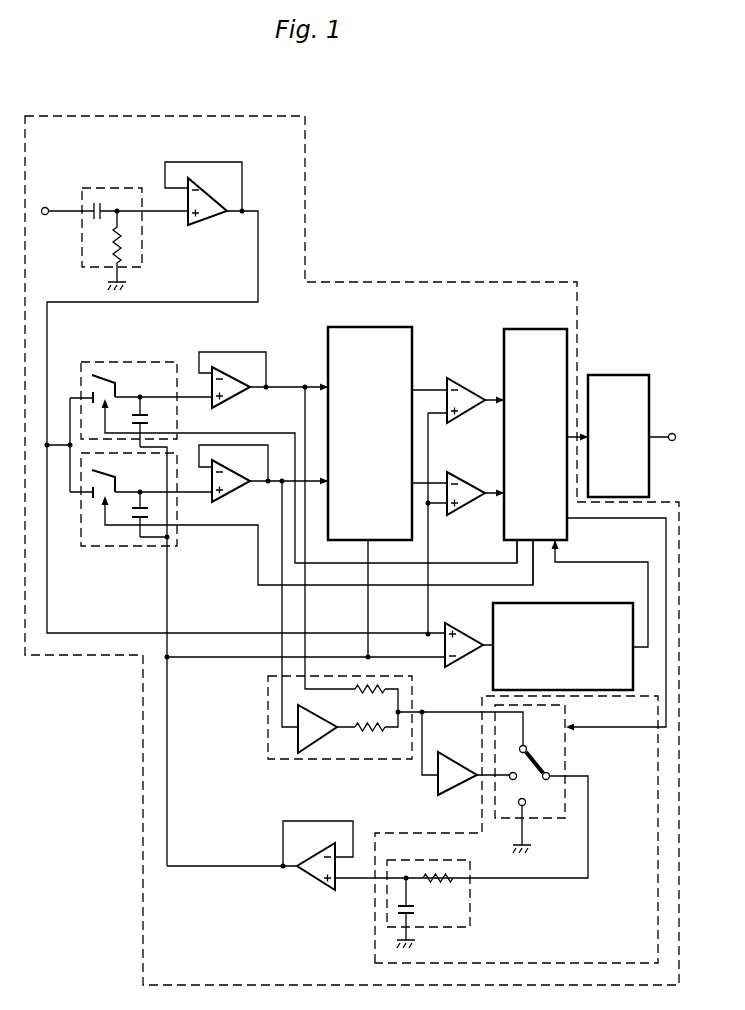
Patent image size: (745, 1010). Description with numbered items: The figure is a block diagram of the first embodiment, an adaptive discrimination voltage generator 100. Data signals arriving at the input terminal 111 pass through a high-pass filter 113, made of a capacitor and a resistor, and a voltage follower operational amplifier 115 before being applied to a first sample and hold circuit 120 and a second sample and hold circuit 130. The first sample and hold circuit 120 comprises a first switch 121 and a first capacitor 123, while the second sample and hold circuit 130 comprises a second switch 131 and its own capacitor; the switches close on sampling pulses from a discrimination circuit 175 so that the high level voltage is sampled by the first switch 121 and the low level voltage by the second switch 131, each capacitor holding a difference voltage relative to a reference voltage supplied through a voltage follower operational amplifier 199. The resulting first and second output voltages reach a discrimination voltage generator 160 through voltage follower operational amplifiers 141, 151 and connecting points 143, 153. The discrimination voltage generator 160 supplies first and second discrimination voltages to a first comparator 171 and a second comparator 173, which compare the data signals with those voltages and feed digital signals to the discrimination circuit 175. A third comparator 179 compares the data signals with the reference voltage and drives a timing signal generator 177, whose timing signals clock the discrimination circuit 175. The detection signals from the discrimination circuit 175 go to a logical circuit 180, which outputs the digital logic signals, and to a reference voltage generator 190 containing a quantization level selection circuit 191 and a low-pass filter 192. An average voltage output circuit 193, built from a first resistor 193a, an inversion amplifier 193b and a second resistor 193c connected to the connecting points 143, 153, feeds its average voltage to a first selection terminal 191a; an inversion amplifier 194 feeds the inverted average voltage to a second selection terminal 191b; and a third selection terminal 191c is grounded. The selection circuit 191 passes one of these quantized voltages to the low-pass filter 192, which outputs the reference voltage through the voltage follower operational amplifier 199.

The adaptive discrimination voltage generator 100 is at (313, 163).
The input terminal 111 is at (47, 207).
The high-pass filter 113 is at (96, 182).
The voltage follower operational amplifier 115 is at (209, 219).
The first sample and hold circuit 120 is at (84, 356).
The first switch 121 is at (110, 374).
The first capacitor 123 is at (150, 418).
The second sample and hold circuit 130 is at (80, 556).
The second switch 131 is at (110, 473).
The voltage follower operational amplifier 141 is at (237, 363).
The first connecting point 143 is at (304, 382).
The voltage follower operational amplifier 151 is at (223, 502).
The second connecting point 153 is at (280, 488).
The discrimination voltage generator 160 is at (360, 327).
The first comparator 171 is at (472, 368).
The second comparator 173 is at (476, 471).
The discrimination circuit 175 is at (517, 329).
The timing signal generator 177 is at (560, 603).
The third comparator 179 is at (473, 617).
The logical circuit 180 is at (612, 375).
The reference voltage generator 190 is at (652, 927).
The quantization level selection circuit 191 is at (578, 749).
The first selection terminal 191a is at (526, 745).
The second selection terminal 191b is at (517, 779).
The third selection terminal 191c is at (527, 806).
The low-pass filter 192 is at (462, 930).
The average voltage output circuit 193 is at (263, 703).
The first resistor 193a is at (390, 688).
The inversion amplifier 193b is at (296, 748).
The second resistor 193c is at (364, 745).
The inversion amplifier 194 is at (453, 788).
The voltage follower operational amplifier 199 is at (315, 882).